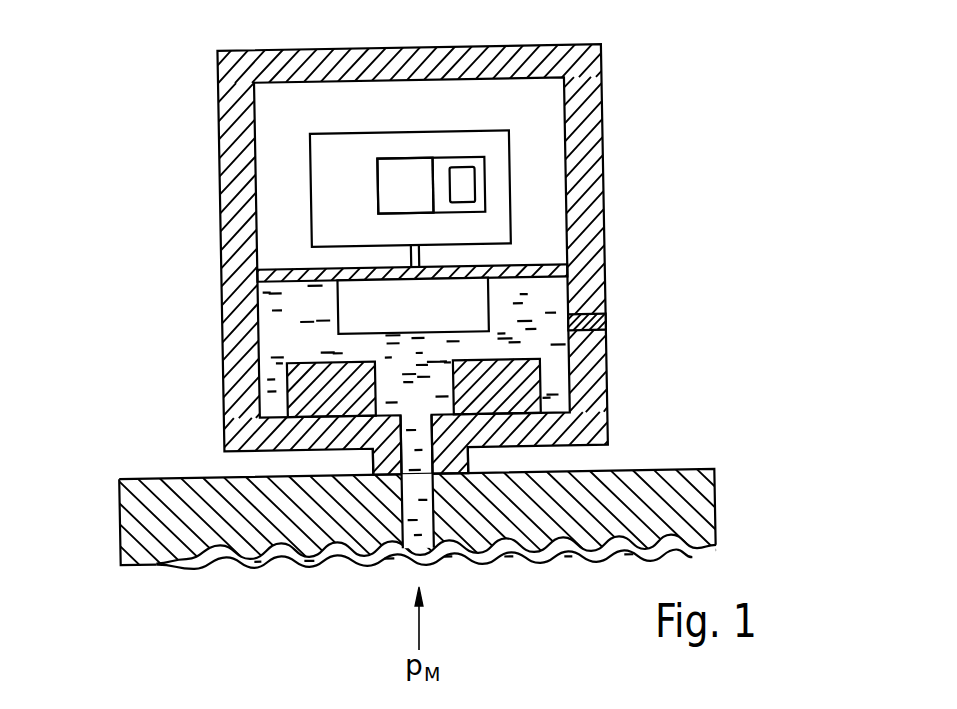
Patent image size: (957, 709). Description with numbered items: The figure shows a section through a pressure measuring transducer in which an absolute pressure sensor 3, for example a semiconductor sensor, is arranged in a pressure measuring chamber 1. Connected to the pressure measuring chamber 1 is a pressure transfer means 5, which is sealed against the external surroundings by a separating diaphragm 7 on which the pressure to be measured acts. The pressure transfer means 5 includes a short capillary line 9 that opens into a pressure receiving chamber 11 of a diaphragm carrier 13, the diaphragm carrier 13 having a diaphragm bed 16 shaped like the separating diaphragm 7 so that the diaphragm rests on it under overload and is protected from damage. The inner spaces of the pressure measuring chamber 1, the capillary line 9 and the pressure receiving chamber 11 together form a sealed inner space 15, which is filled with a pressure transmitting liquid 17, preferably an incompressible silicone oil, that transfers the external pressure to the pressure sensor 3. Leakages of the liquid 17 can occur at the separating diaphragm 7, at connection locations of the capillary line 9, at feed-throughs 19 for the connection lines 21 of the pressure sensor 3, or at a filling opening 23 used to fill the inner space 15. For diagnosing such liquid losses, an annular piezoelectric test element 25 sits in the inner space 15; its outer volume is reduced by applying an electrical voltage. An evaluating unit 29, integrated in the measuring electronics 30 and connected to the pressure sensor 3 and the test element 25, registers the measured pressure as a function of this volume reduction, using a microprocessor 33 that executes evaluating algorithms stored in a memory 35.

The pressure measuring chamber 1 is at (265, 300).
The pressure sensor 3 is at (402, 321).
The pressure transfer means 5 is at (647, 449).
The separating diaphragm 7 is at (247, 567).
The capillary line 9 is at (375, 460).
The pressure receiving chamber 11 is at (475, 546).
The diaphragm carrier 13 is at (130, 522).
The sealed inner space 15 is at (547, 343).
The diaphragm bed 16 is at (552, 536).
The pressure transmitting liquid 17 is at (413, 382).
The feed-through 19 is at (362, 267).
The connection line 21 is at (557, 262).
The filling opening 23 is at (607, 325).
The test element 25 is at (308, 393).
The evaluating unit 29 is at (408, 158).
The measuring electronics 30 is at (334, 189).
The microprocessor 33 is at (420, 196).
The memory 35 is at (458, 170).